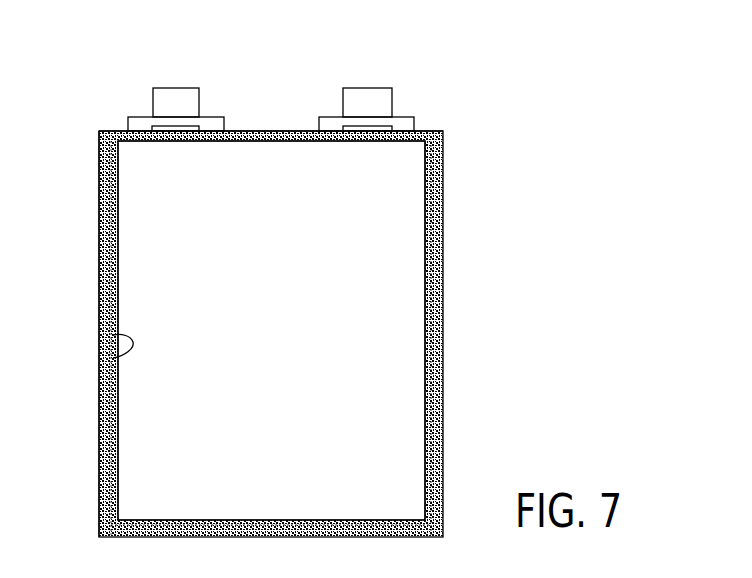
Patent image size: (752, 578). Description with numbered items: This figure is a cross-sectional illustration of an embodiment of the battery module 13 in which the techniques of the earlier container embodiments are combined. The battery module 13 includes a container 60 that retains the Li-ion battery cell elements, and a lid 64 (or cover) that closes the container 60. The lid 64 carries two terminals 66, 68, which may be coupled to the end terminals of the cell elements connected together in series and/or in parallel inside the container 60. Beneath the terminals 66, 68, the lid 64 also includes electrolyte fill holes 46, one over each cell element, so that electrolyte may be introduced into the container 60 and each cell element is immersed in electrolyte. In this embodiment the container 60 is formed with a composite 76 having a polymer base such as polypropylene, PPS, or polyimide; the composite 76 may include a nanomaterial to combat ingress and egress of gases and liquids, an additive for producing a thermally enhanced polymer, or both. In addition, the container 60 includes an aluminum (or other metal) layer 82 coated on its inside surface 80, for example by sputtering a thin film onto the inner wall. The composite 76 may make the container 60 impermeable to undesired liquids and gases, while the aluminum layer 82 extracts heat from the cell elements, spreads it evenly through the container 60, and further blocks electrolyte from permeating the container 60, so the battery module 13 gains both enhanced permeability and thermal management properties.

The battery module 13 is at (440, 41).
The electrolyte fill holes 46 is at (367, 126).
The container 60 is at (477, 171).
The lid 64 is at (432, 133).
The terminal 66 is at (175, 88).
The terminal 68 is at (366, 88).
The composite 76 is at (315, 330).
The inside surface 80 is at (113, 358).
The aluminum layer 82 is at (113, 246).